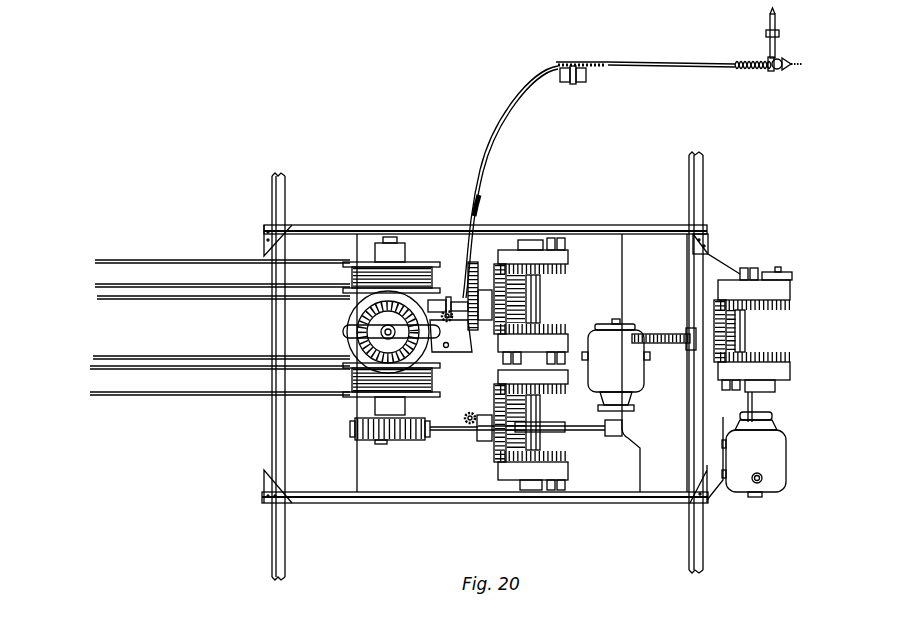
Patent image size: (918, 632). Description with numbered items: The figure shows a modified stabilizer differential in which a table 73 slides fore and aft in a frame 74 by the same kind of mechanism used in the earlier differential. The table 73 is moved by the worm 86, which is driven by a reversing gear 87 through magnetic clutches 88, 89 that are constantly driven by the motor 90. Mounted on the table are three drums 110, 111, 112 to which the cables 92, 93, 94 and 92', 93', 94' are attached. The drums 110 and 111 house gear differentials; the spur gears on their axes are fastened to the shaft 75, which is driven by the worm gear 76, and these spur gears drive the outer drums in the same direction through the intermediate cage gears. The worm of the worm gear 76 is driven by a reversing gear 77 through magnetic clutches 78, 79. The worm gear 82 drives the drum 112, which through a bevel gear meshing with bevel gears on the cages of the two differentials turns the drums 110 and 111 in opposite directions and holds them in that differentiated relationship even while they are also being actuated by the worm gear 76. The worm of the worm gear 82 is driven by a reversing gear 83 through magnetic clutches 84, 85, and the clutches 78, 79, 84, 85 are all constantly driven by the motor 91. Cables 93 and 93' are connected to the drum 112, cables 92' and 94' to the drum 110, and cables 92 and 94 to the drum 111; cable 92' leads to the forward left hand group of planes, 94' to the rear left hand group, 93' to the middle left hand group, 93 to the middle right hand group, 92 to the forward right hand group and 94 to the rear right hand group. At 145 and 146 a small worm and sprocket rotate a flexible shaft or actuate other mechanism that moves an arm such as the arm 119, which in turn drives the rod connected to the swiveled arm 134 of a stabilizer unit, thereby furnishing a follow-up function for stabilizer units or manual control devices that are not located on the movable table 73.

The frame 74 is at (662, 229).
The shaft 75 is at (388, 237).
The worm gear 82 is at (457, 300).
The drum 110 is at (345, 274).
The drum 111 is at (345, 382).
The drum 112 is at (348, 323).
The worm gear 76 is at (378, 441).
The small worm 145 is at (452, 326).
The sprocket 146 is at (464, 413).
The magnetic clutch 85 is at (534, 253).
The reversing gear 83 is at (530, 299).
The magnetic clutch 84 is at (533, 346).
The magnetic clutch 78 is at (534, 378).
The reversing gear 77 is at (541, 423).
The magnetic clutch 79 is at (533, 473).
The table 73 is at (632, 363).
The worm 86 is at (662, 334).
The motor 91 is at (616, 365).
The magnetic clutch 88 is at (755, 286).
The reversing gear 87 is at (748, 331).
The magnetic clutch 89 is at (754, 374).
The motor 90 is at (746, 446).
The cable 92' is at (222, 250).
The cable 94' is at (222, 275).
The cable 93' is at (223, 308).
The cable 93 is at (221, 346).
The cable 92 is at (220, 377).
The cable 94 is at (220, 404).
The arm 119 is at (655, 68).
The arm 134 is at (780, 50).